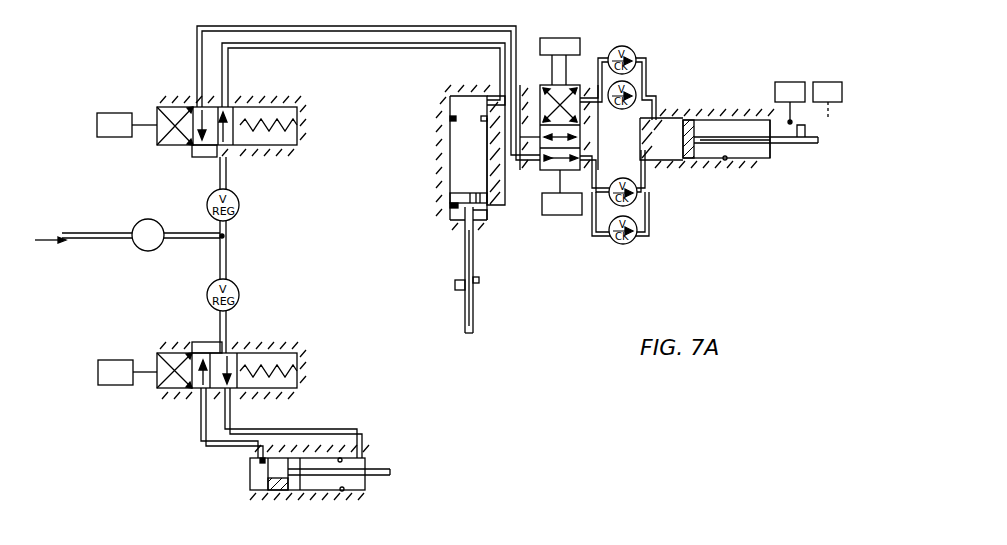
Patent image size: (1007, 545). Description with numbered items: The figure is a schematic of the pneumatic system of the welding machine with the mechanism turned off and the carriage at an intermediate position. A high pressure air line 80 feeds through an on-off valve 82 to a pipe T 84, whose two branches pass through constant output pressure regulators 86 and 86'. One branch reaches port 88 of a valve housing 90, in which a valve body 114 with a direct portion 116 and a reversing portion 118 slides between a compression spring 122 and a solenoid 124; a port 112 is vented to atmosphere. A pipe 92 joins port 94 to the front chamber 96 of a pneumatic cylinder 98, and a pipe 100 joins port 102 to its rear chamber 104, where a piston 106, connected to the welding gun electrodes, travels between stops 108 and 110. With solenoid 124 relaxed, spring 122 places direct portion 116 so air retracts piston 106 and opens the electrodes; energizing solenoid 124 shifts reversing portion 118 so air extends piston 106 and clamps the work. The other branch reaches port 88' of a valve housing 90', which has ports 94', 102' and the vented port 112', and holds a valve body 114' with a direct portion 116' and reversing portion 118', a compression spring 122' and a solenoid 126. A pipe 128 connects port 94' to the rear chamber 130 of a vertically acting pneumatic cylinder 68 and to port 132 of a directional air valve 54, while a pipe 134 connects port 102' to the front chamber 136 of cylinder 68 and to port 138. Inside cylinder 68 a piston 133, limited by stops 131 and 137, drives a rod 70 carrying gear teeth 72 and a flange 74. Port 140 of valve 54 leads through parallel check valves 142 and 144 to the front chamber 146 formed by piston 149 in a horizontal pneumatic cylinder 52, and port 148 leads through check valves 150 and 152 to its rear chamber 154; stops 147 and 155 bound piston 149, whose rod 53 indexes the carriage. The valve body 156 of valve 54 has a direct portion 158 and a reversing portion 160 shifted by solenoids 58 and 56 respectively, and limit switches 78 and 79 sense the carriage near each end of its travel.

The horizontal pneumatic cylinder 52 is at (750, 116).
The rod 53 is at (806, 144).
The directional air valve 54 is at (538, 120).
The solenoid 56 is at (558, 38).
The solenoid 58 is at (544, 215).
The vertically acting pneumatic cylinder 68 is at (432, 156).
The rod 70 is at (465, 256).
The gear teeth 72 is at (470, 333).
The flange 74 is at (479, 278).
The limit switch 78 is at (788, 80).
The limit switch 79 is at (830, 80).
The high pressure air line 80 is at (96, 241).
The on-off valve 82 is at (142, 250).
The pipe T 84 is at (226, 236).
The constant output pressure regulator 86 is at (240, 294).
The constant output pressure regulator 86' is at (242, 196).
The port 88 is at (243, 326).
The port 88' is at (239, 159).
The valve housing 90 is at (233, 357).
The valve housing 90' is at (233, 135).
The pipe 92 is at (298, 430).
The port 94 is at (293, 423).
The port 94' is at (232, 89).
The front chamber 96 is at (366, 457).
The pneumatic cylinder 98 is at (314, 496).
The pipe 100 is at (216, 444).
The port 102 is at (227, 392).
The port 102' is at (227, 109).
The rear chamber 104 is at (250, 471).
The piston 106 is at (276, 492).
The stop 108 is at (344, 492).
The stop 110 is at (264, 492).
The port 112 is at (193, 332).
The port 112' is at (181, 166).
The valve body 114 is at (126, 390).
The valve body 114' is at (126, 153).
The direct portion 116 is at (175, 402).
The direct portion 116' is at (207, 163).
The reversing portion 118 is at (144, 404).
The reversing portion 118' is at (154, 162).
The compression spring 122 is at (288, 353).
The compression spring 122' is at (285, 102).
The solenoid 124 is at (106, 360).
The solenoid 126 is at (124, 112).
The pipe 128 is at (342, 50).
The rear chamber 130 is at (454, 94).
The stop 131 is at (450, 120).
The port 132 is at (554, 170).
The piston 133 is at (450, 198).
The pipe 134 is at (256, 28).
The front chamber 136 is at (476, 224).
The stop 137 is at (452, 207).
The port 138 is at (529, 127).
The port 140 is at (614, 187).
The check valve 142 is at (636, 236).
The check valve 144 is at (628, 172).
The front chamber 146 is at (766, 156).
The stop 147 is at (726, 160).
The port 148 is at (590, 126).
The piston 149 is at (700, 118).
The check valve 150 is at (630, 50).
The check valve 152 is at (636, 96).
The rear chamber 154 is at (688, 118).
The stop 155 is at (670, 160).
The valve body 156 is at (558, 84).
The direct portion 158 is at (542, 196).
The reversing portion 160 is at (550, 85).